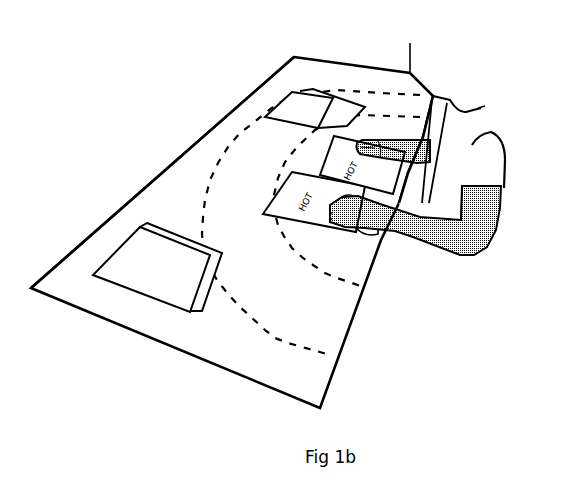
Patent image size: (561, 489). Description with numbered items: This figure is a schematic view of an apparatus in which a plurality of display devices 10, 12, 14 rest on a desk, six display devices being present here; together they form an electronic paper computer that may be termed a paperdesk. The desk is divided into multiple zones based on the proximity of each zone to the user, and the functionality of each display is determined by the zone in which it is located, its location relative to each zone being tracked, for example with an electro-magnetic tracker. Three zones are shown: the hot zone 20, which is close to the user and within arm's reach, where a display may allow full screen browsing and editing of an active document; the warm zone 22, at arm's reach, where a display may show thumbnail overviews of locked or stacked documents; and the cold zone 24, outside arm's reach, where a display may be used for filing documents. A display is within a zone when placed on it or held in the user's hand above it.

The display device 10 is at (373, 180).
The display device 12 is at (314, 88).
The display device 14 is at (197, 298).
The hot zone 20 is at (368, 287).
The warm zone 22 is at (242, 162).
The cold zone 24 is at (267, 80).